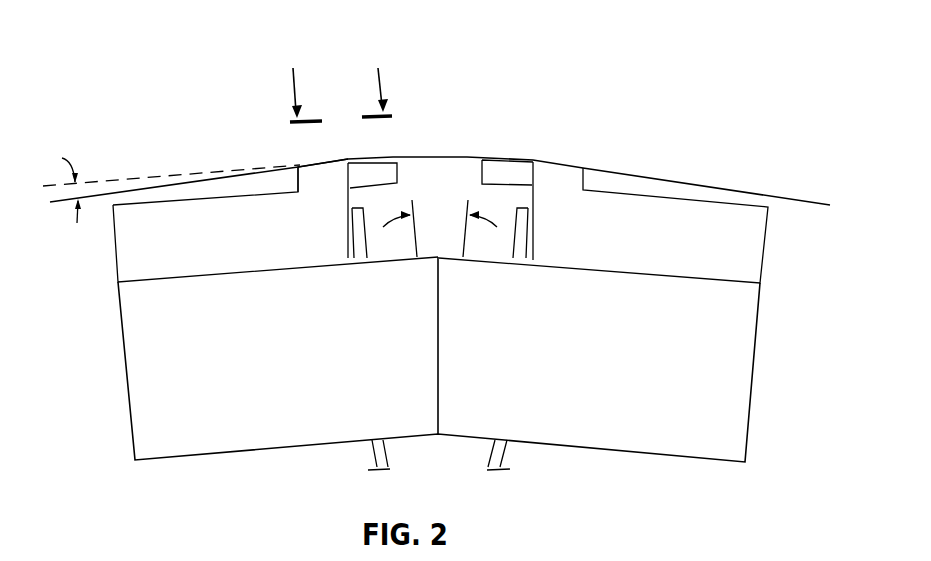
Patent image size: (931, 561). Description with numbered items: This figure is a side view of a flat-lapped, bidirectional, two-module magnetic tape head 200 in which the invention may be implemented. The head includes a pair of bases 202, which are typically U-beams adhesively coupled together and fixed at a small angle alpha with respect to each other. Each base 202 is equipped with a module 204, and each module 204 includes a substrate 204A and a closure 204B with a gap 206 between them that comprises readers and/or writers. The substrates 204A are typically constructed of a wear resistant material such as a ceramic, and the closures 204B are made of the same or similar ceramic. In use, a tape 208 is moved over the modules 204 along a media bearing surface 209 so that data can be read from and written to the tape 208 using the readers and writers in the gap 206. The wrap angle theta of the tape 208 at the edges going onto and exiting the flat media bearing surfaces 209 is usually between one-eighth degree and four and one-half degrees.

The magnetic tape head 200 is at (172, 125).
The base 202 is at (123, 347).
The module 204 is at (115, 250).
The substrate 204A is at (177, 225).
The closure 204B is at (480, 173).
The gap 206 is at (348, 158).
The tape 208 is at (678, 178).
The media bearing surface 209 is at (303, 162).